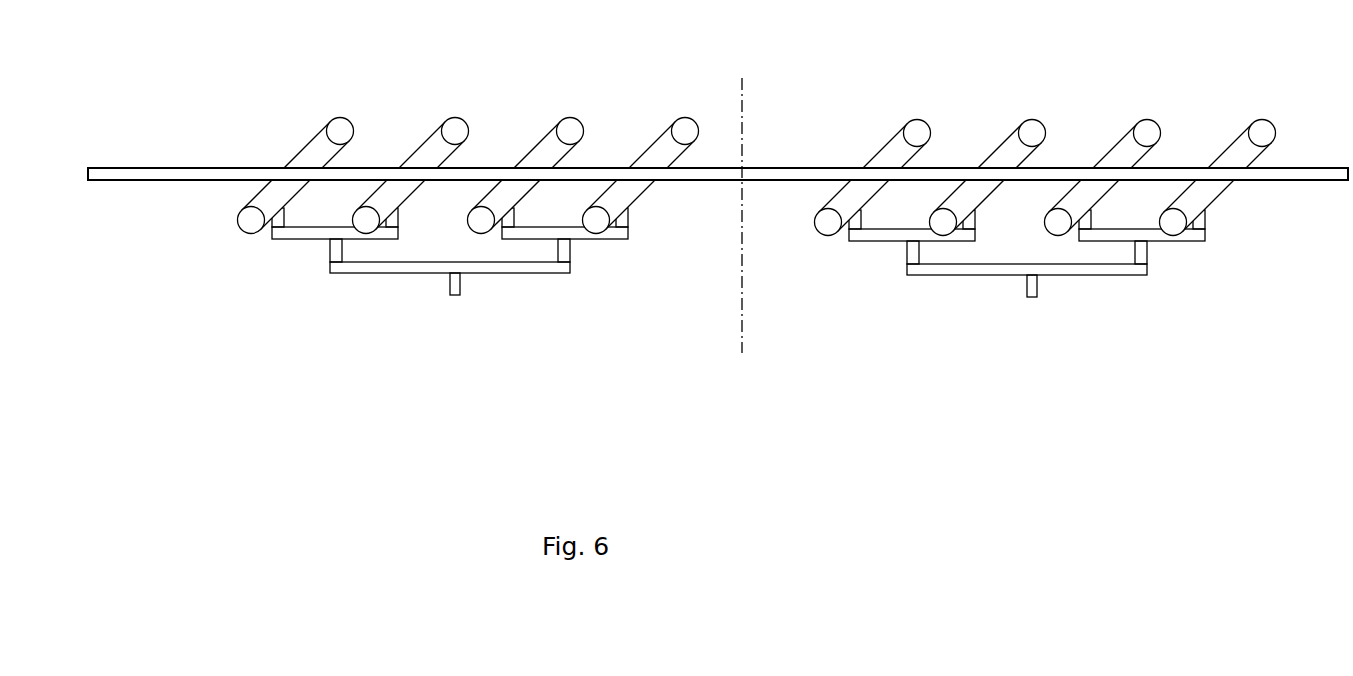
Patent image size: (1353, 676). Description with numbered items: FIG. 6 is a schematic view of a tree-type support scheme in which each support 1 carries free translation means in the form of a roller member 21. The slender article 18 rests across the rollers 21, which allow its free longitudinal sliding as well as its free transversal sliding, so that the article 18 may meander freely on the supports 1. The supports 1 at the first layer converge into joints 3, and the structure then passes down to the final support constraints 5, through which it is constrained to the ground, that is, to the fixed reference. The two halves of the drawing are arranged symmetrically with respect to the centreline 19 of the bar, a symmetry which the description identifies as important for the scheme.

The support 1 is at (258, 244).
The joint 3 is at (317, 263).
The final support constraint 5 is at (433, 293).
The slender article 18 is at (185, 153).
The centreline 19 is at (725, 323).
The roller member 21 is at (295, 122).